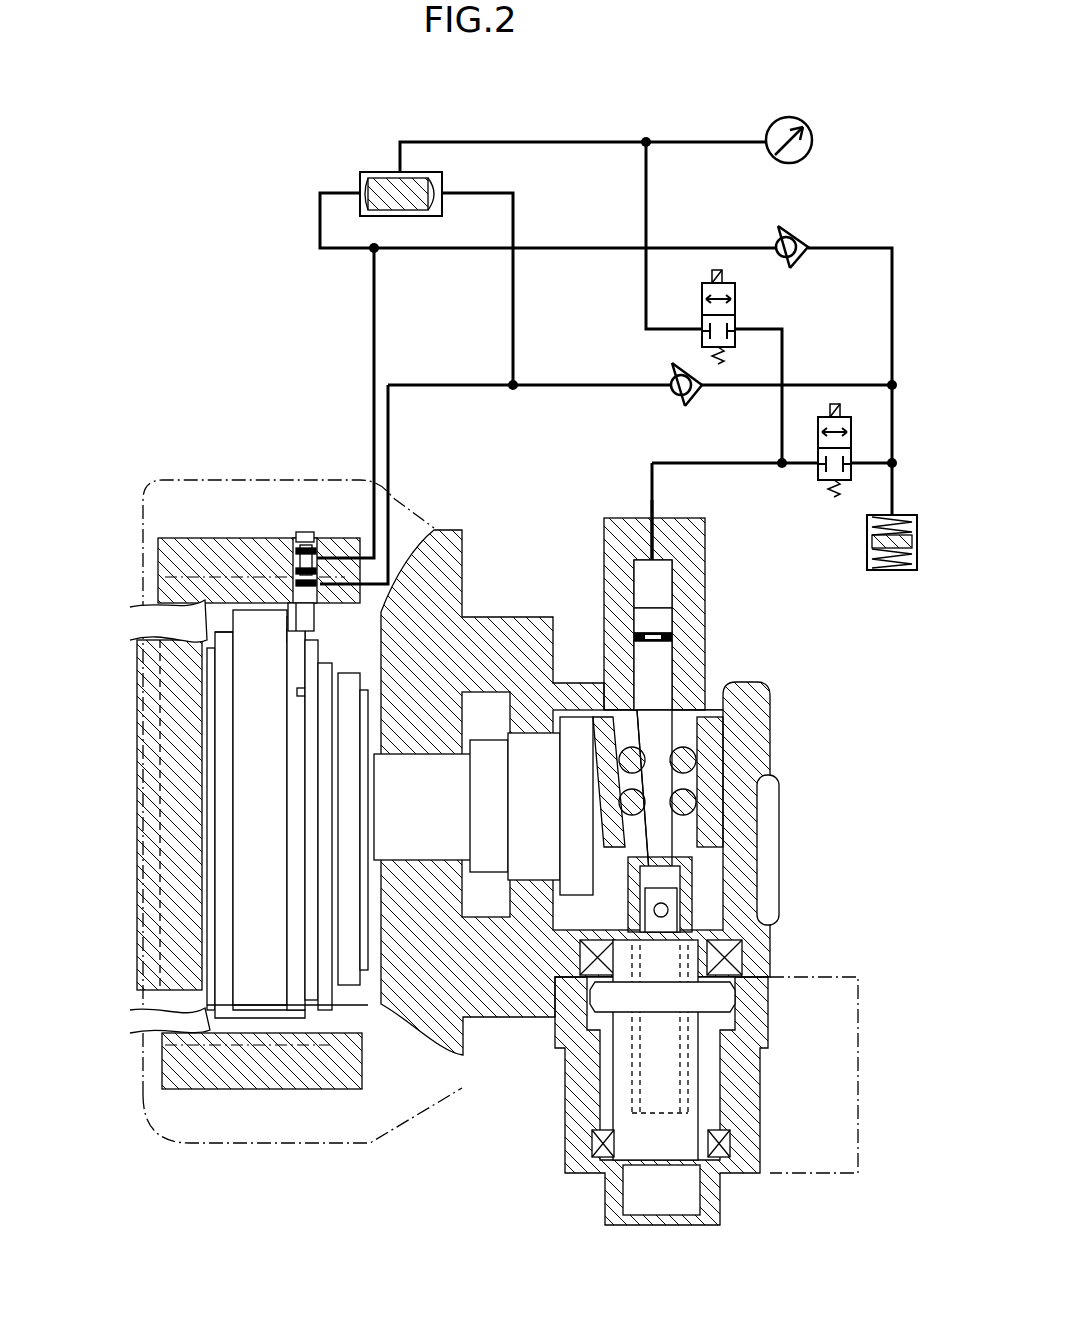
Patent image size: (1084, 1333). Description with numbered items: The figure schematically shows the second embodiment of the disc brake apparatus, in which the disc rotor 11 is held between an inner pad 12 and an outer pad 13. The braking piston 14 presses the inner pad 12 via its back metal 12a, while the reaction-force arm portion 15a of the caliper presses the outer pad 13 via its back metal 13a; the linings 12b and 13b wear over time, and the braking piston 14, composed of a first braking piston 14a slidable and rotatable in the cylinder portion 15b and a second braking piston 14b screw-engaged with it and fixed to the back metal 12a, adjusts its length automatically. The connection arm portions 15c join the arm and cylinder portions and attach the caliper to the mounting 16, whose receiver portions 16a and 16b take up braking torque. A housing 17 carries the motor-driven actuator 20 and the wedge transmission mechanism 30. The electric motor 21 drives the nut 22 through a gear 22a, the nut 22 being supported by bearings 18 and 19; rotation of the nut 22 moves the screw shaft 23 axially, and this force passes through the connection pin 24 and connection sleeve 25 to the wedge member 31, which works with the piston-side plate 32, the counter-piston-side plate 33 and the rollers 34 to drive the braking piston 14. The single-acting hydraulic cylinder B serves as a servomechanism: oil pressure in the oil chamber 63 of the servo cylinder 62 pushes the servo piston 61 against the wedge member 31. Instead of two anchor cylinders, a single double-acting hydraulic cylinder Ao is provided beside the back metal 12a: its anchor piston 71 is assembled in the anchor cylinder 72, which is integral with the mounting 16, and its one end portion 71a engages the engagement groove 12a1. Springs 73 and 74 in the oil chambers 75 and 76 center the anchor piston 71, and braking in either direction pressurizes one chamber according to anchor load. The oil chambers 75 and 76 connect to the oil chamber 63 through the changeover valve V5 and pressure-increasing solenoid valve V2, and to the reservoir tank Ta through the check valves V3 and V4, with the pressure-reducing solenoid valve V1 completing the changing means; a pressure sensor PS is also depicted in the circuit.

The disc rotor 11 is at (266, 1006).
The inner pad 12 is at (290, 738).
The back metal 12a is at (310, 768).
The engagement groove 12a1 is at (295, 690).
The lining 12b is at (297, 796).
The outer pad 13 is at (222, 944).
The back metal 13a is at (212, 893).
The lining 13b is at (212, 836).
The braking piston 14 is at (488, 745).
The first braking piston 14a is at (533, 745).
The second braking piston 14b is at (346, 682).
The reaction-force arm portion 15a is at (150, 866).
The cylinder portion 15b is at (436, 880).
The connection arm portion 15c is at (203, 478).
The mounting 16 is at (178, 538).
The receiver portion 16a is at (150, 608).
The receiver portion 16b is at (150, 1022).
The housing 17 is at (756, 686).
The bearing 18 is at (746, 960).
The bearing 19 is at (592, 1144).
The motor-driven actuator 20 is at (760, 1177).
The electric motor 21 is at (838, 1178).
The nut 22 is at (614, 1090).
The gear 22a is at (742, 996).
The screw shaft 23 is at (668, 912).
The connection pin 24 is at (692, 902).
The connection sleeve 25 is at (636, 916).
The wedge transmission mechanism 30 is at (712, 720).
The wedge member 31 is at (665, 791).
The piston-side plate 32 is at (606, 796).
The counter-piston-side plate 33 is at (718, 781).
The roller 34 is at (620, 760).
The servo piston 61 is at (645, 661).
The servo cylinder 62 is at (622, 592).
The oil chamber 63 is at (642, 574).
The anchor piston 71 is at (285, 632).
The one end portion 71a is at (294, 640).
The anchor cylinder 72 is at (294, 578).
The spring 73 is at (310, 568).
The spring 74 is at (322, 599).
The oil chamber 75 is at (322, 574).
The oil chamber 76 is at (314, 623).
The double-acting hydraulic cylinder Ao is at (300, 572).
The single-acting hydraulic cylinder B is at (685, 612).
The pressure sensor PS is at (812, 140).
The reservoir tank Ta is at (918, 548).
The pressure-reducing solenoid valve V1 is at (815, 470).
The pressure-increasing solenoid valve V2 is at (740, 320).
The check valve V3 is at (800, 236).
The check valve V4 is at (690, 398).
The changeover valve V5 is at (372, 172).